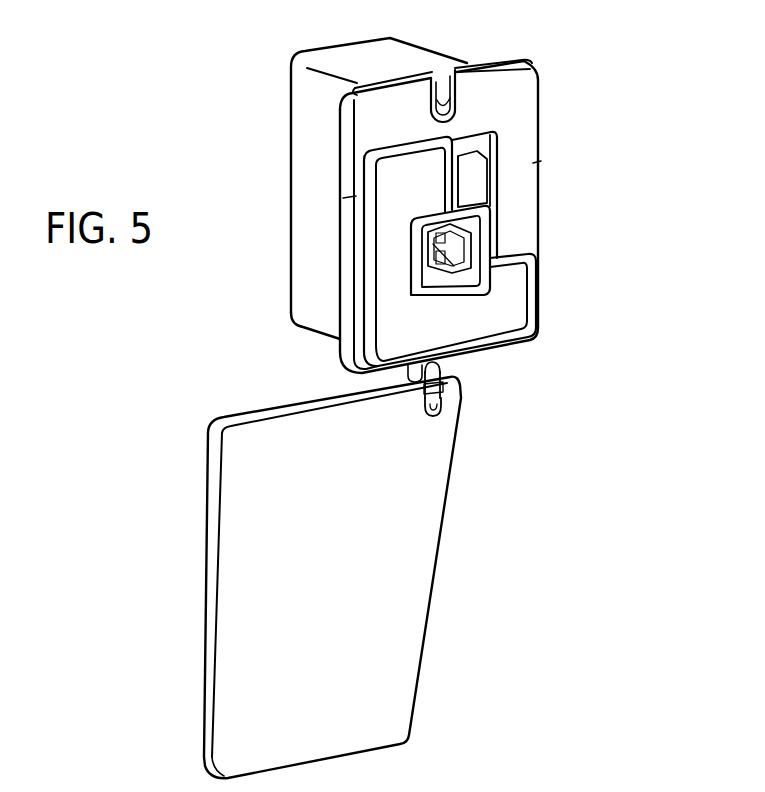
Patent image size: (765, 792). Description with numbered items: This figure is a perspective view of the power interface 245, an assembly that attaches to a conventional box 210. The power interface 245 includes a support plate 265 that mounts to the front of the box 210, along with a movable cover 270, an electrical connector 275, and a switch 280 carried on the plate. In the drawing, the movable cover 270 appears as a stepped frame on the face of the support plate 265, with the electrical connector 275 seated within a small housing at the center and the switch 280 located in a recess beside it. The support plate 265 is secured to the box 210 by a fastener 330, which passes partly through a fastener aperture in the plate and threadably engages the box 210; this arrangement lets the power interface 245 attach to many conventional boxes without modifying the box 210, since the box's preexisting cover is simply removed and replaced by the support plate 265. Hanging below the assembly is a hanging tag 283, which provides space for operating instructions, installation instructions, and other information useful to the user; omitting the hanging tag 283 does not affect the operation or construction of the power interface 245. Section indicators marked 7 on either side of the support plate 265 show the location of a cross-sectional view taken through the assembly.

The box 210 is at (400, 55).
The power interface 245 is at (560, 68).
The fastener 330 is at (464, 109).
The support plate 265 is at (520, 143).
The switch 280 is at (478, 179).
The electrical connector 275 is at (473, 230).
The movable cover 270 is at (512, 298).
The hanging tag 283 is at (388, 532).
The section line 7- 7 is at (335, 201).